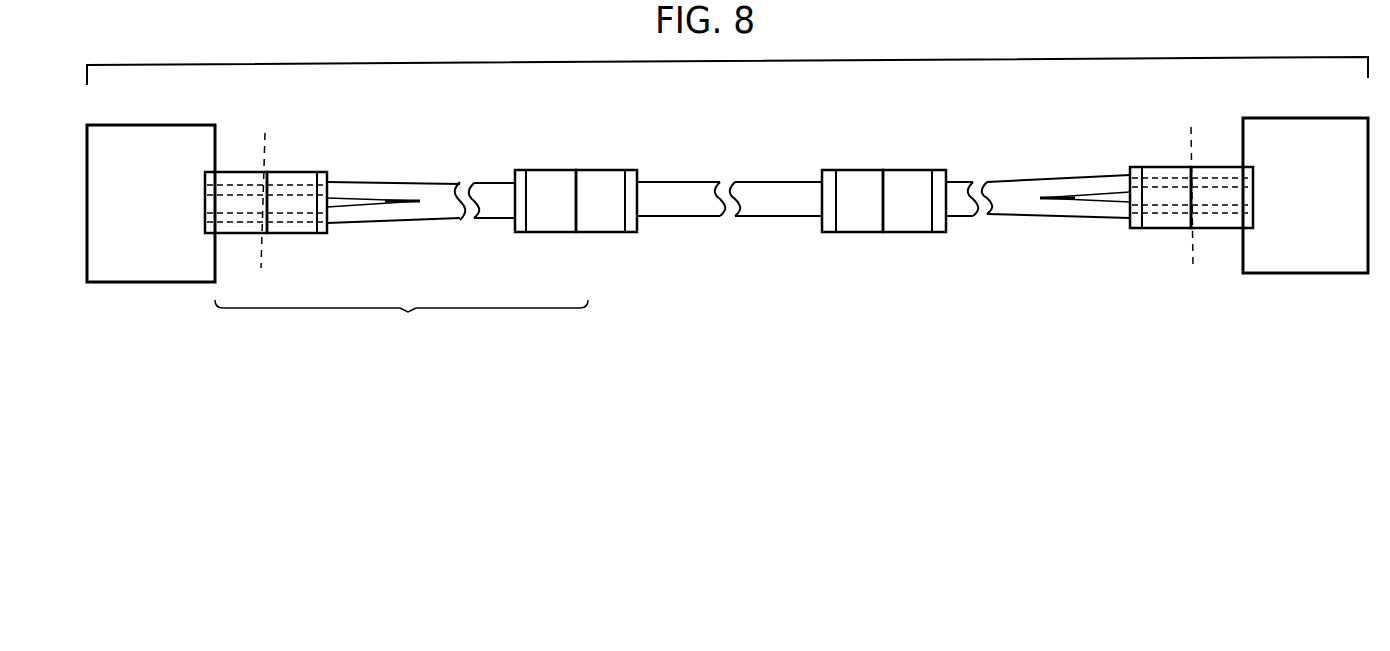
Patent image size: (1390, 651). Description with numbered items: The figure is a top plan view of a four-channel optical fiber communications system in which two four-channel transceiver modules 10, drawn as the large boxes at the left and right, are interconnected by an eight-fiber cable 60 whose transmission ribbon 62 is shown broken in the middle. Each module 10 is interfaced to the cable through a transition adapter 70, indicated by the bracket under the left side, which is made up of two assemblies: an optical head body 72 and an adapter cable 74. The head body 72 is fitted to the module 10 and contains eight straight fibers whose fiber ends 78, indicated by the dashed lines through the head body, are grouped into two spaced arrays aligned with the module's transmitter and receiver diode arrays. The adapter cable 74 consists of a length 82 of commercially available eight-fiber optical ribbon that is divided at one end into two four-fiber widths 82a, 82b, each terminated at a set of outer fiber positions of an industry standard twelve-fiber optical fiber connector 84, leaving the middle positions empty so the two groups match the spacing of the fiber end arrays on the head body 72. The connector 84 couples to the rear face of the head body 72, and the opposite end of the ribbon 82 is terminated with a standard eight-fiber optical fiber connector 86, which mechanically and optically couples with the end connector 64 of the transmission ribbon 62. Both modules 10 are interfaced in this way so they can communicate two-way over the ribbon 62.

The transceiver module 10 is at (148, 282).
The cable 60 is at (668, 181).
The transmission ribbon 62 is at (780, 182).
The end connector 64 is at (604, 170).
The transition adapter 70 is at (401, 321).
The optical head body 72 is at (235, 172).
The adapter cable 74 is at (438, 219).
The fiber end 78 is at (733, 199).
The length of optical ribbon 82 is at (440, 196).
The 4-fiber width 82a is at (345, 183).
The 4-fiber width 82b is at (345, 218).
The 12-fiber optical fiber connector 84 is at (295, 172).
The 8-fiber optical fiber connector 86 is at (540, 170).